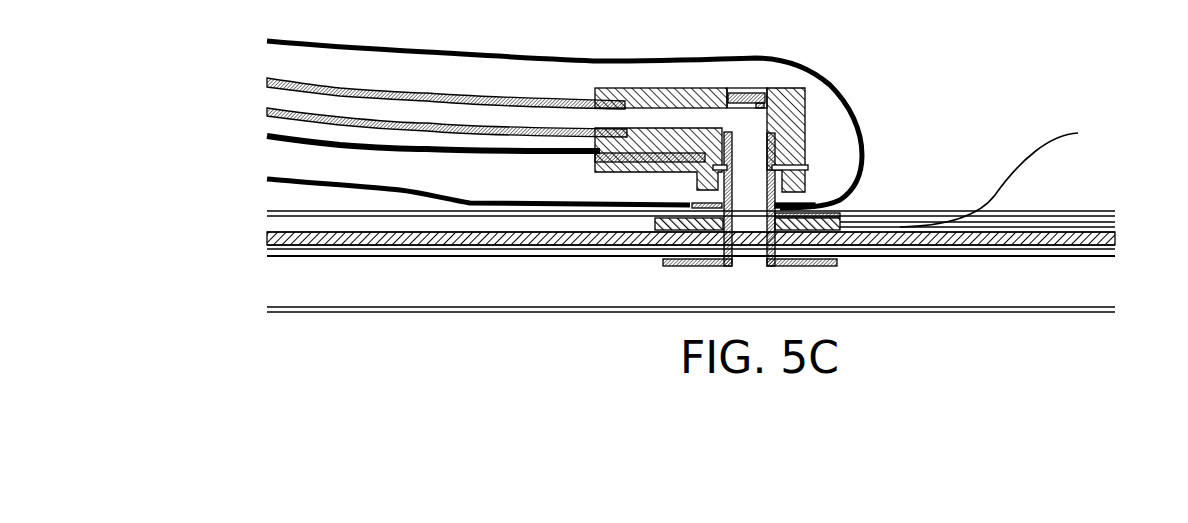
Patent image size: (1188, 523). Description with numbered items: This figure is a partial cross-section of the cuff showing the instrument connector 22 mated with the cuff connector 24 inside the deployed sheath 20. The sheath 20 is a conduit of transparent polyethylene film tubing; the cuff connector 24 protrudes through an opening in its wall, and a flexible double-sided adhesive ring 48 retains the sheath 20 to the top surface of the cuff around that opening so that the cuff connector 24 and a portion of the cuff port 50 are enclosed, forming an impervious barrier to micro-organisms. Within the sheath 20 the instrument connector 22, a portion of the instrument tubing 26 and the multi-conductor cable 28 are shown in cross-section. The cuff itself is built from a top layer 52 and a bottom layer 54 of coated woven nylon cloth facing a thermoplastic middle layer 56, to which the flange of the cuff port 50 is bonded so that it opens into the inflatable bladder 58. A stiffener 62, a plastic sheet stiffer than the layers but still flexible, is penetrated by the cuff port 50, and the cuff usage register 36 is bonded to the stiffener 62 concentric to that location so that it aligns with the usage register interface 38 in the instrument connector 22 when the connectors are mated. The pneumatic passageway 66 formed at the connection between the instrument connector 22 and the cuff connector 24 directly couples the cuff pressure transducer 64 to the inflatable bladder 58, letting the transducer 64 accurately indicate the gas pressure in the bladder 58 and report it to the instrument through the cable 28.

The sheath 20 is at (587, 60).
The instrument connector 22 is at (687, 88).
The cuff connector 24 is at (805, 160).
The instrument tubing 26 is at (308, 85).
The cable 28 is at (270, 138).
The cuff usage register 36 is at (977, 174).
The usage register interface 38 is at (633, 168).
The adhesive ring 48 is at (807, 208).
The cuff port 50 is at (679, 267).
The top layer 52 is at (1043, 210).
The bottom layer 54 is at (533, 312).
The middle layer 56 is at (432, 258).
The inflatable bladder 58 is at (868, 292).
The stiffener 62 is at (1088, 232).
The cuff pressure transducer 64 is at (753, 92).
The pneumatic passageway 66 is at (752, 134).